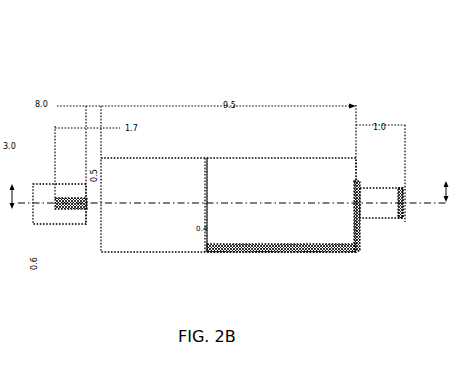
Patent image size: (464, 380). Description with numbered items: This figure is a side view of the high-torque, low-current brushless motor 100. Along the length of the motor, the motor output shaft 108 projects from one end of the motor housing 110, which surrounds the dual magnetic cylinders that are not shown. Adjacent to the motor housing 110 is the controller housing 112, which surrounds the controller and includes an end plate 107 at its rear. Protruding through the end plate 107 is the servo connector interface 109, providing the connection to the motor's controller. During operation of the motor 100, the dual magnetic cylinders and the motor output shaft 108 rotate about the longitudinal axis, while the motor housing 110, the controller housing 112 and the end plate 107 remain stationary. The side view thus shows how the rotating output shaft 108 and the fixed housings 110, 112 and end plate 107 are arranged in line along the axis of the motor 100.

The brushless motor 100 is at (421, 74).
The end plate 107 is at (364, 235).
The motor output shaft 108 is at (62, 210).
The servo connector interface 109 is at (389, 213).
The motor housing 110 is at (137, 242).
The controller housing 112 is at (260, 221).